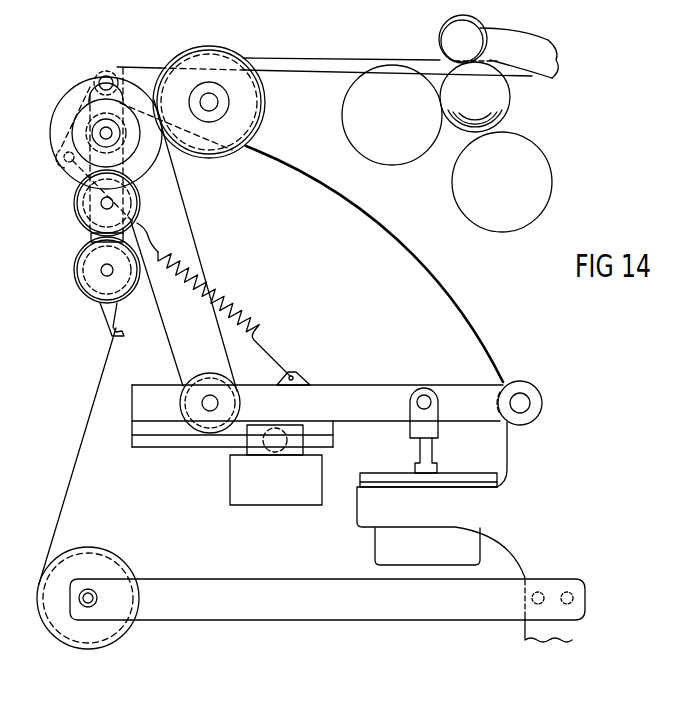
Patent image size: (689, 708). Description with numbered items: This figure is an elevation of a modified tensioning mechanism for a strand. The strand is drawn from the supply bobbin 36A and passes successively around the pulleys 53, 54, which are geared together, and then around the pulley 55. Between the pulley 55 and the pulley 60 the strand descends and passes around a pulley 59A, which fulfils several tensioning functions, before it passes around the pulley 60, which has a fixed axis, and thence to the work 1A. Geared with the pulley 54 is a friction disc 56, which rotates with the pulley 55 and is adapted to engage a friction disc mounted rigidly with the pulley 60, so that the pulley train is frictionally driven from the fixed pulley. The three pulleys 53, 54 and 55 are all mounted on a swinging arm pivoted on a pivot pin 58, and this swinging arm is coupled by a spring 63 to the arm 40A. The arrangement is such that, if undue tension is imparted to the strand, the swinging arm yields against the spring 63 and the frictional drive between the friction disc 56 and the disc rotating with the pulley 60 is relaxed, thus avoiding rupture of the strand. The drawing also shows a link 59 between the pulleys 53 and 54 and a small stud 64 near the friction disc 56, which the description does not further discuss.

The pulley 60 is at (240, 53).
The friction disc 56 is at (70, 86).
The pulley 55 is at (84, 122).
The pivot pin 58 is at (107, 75).
The stud 64 is at (63, 157).
The pulley 54 is at (92, 203).
The link 59 is at (88, 238).
The pulley 53 is at (94, 286).
The spring 63 is at (228, 298).
The arm 40A is at (337, 434).
The pulley 59A is at (178, 380).
The supply bobbin 36A is at (124, 548).
The work 1A is at (511, 98).